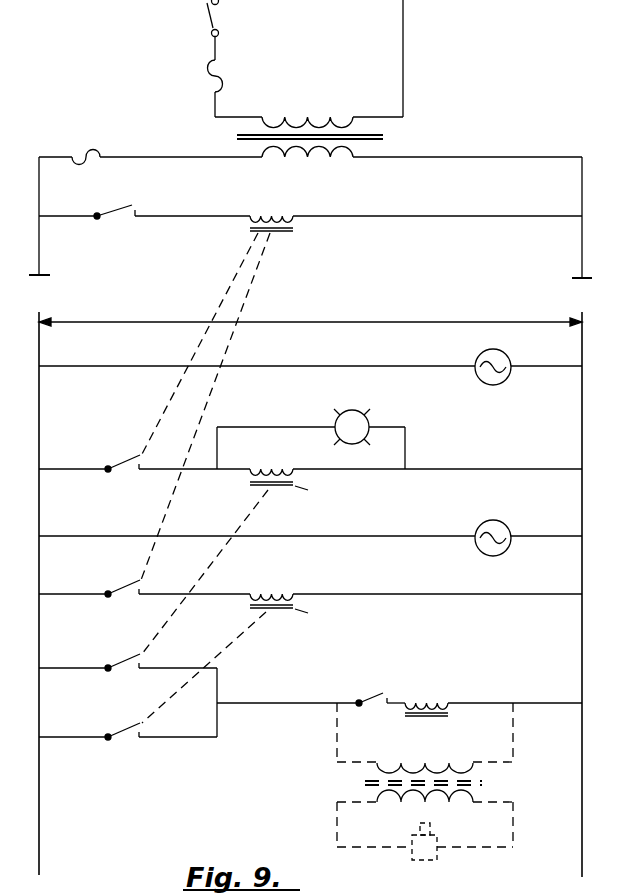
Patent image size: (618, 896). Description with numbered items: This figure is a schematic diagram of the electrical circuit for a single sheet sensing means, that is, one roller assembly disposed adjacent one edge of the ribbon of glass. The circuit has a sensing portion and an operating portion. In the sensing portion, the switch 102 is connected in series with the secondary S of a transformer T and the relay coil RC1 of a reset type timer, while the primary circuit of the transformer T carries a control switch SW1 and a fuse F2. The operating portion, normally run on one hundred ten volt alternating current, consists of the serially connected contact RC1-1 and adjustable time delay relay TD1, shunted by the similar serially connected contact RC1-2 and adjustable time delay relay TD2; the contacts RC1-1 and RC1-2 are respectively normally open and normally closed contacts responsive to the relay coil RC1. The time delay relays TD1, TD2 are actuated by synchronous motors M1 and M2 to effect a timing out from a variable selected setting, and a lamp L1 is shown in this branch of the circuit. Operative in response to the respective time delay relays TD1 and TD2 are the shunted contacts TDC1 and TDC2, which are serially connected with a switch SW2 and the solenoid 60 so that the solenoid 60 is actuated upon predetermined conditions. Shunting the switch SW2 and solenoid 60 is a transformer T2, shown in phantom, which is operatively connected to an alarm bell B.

The control switch SW1 is at (218, 15).
The fuse F2 is at (220, 76).
The transformer T is at (414, 145).
The secondary S is at (320, 152).
The switch 102 is at (120, 212).
The relay coil RC1 is at (266, 214).
The synchronous motor M1 is at (499, 354).
The lamp L1 is at (358, 406).
The normally open contact RC1-1 is at (123, 464).
The adjustable time delay relay TD1 is at (268, 467).
The synchronous motor M2 is at (499, 525).
The normally closed contact RC1-2 is at (123, 589).
The adjustable time delay relay TD2 is at (268, 592).
The contact TDC1 is at (121, 664).
The contact TDC2 is at (122, 733).
The switch SW2 is at (364, 698).
The solenoid 60 is at (423, 702).
The transformer T2 is at (523, 791).
The alarm bell B is at (438, 857).